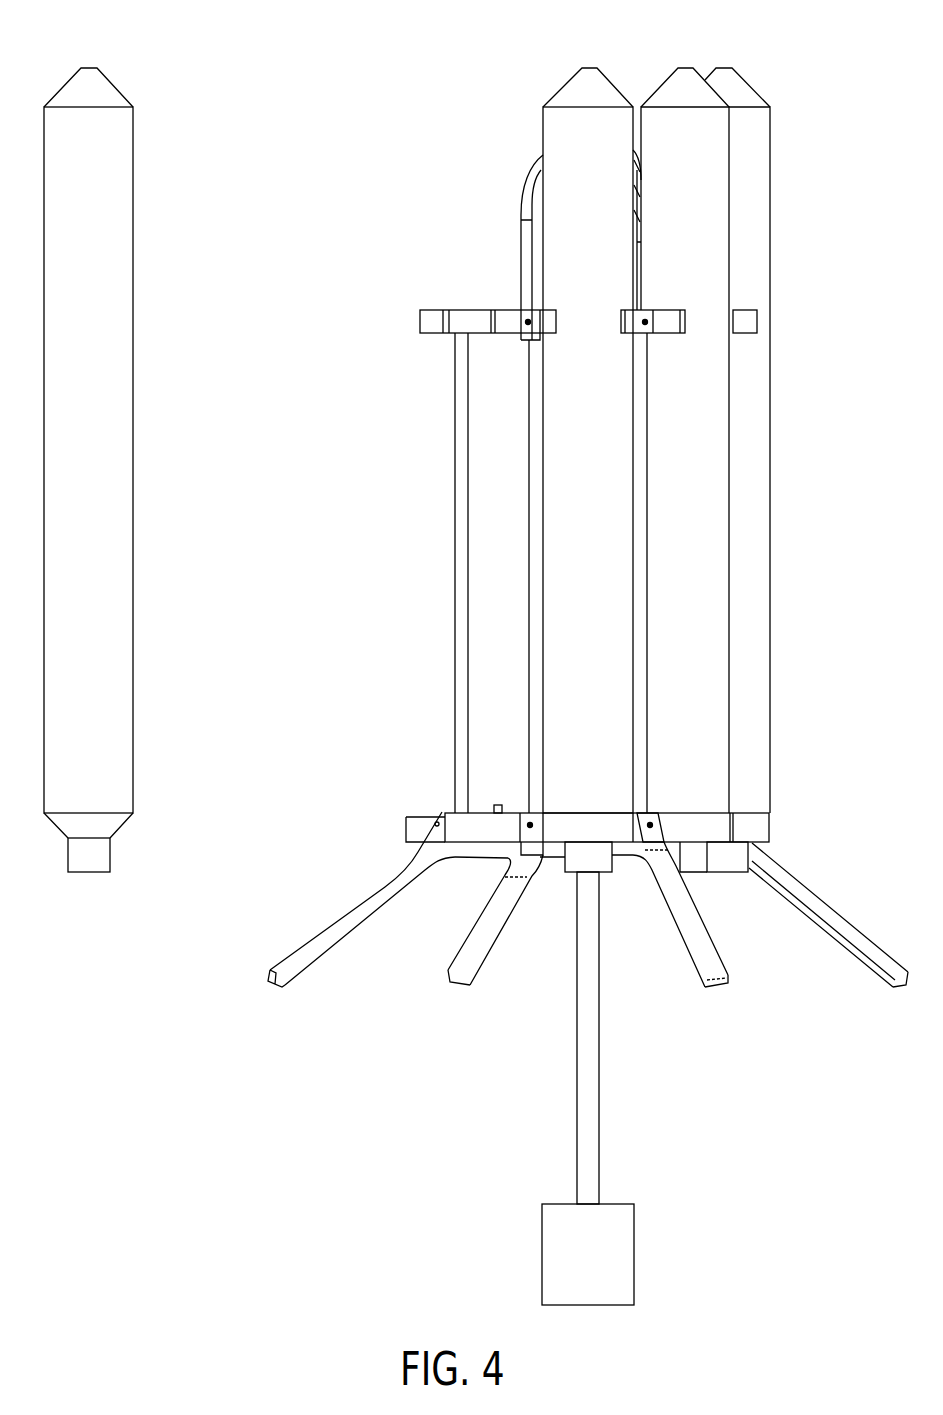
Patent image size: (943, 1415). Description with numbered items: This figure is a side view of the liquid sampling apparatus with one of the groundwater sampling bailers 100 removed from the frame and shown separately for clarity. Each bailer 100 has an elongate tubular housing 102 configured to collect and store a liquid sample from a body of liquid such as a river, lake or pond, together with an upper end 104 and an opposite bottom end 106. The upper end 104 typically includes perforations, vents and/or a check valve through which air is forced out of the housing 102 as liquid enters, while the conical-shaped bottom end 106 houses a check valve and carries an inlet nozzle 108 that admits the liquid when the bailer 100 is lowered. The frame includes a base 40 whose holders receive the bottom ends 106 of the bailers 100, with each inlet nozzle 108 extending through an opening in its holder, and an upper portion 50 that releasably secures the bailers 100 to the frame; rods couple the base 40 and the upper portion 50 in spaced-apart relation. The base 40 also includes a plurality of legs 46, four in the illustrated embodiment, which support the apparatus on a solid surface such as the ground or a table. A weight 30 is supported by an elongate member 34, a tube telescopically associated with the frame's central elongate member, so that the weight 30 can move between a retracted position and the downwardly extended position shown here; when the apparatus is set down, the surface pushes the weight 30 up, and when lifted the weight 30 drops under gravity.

The weight 30 is at (618, 1255).
The elongate member 34 is at (593, 1098).
The base 40 is at (588, 689).
The leg 46 is at (352, 923).
The upper portion 50 is at (407, 366).
The groundwater sampling bailer 100 is at (443, 475).
The elongate tubular housing 102 is at (133, 252).
The upper end 104 is at (107, 78).
The bottom end 106 is at (112, 827).
The inlet nozzle 108 is at (98, 858).